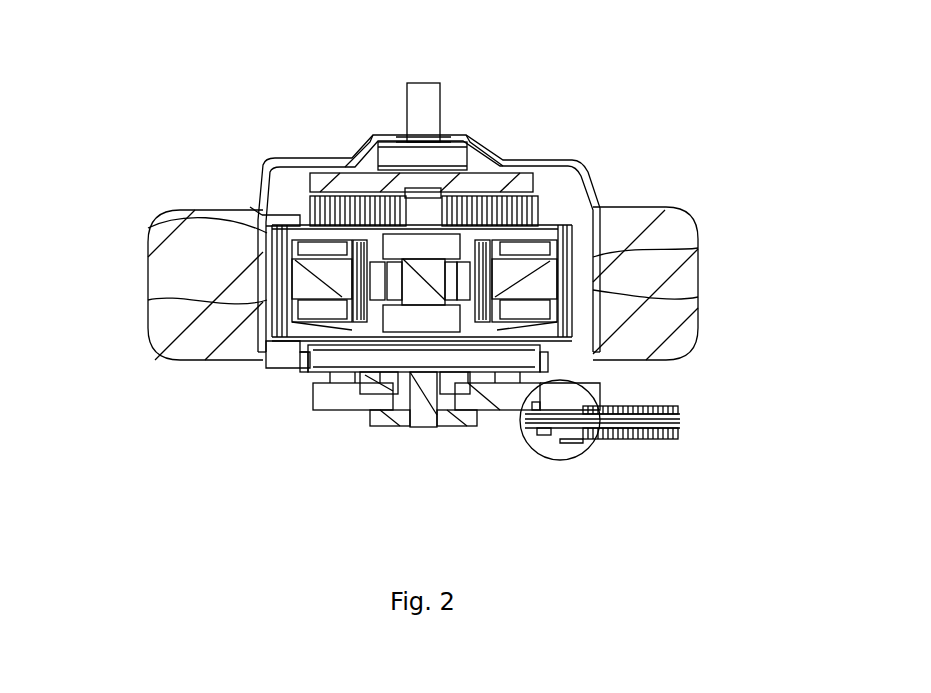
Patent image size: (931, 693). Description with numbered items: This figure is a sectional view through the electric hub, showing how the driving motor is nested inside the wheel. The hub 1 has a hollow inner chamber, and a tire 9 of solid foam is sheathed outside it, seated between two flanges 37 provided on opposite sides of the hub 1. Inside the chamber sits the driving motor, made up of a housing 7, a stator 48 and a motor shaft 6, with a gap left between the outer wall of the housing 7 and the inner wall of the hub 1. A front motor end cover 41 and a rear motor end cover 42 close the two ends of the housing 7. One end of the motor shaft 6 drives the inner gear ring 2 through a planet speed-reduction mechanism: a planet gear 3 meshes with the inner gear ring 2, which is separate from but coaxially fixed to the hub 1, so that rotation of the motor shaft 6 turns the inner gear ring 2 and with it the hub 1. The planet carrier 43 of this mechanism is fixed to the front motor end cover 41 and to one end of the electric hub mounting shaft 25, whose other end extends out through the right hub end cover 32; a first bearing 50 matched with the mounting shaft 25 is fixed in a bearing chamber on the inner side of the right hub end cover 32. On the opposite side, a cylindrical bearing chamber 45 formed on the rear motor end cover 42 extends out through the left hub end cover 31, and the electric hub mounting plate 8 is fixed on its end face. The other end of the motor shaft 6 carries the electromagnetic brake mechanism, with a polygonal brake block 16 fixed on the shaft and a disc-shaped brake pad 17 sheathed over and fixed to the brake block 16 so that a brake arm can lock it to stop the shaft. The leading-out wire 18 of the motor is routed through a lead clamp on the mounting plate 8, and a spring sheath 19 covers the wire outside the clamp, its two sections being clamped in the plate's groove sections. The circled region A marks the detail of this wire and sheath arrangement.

The hub 1 is at (267, 302).
The inner gear ring 2 is at (298, 207).
The planet gear 3 is at (545, 200).
The motor shaft 6 is at (426, 432).
The housing 7 is at (565, 270).
The electric hub mounting plate 8 is at (333, 390).
The tire 9 is at (640, 207).
The brake block 16 is at (442, 432).
The brake pad 17 is at (375, 423).
The leading-out wire 18 is at (677, 417).
The spring sheath 19 is at (657, 440).
The electric hub mounting shaft 25 is at (420, 113).
The left hub end cover 31 is at (605, 360).
The right hub end cover 32 is at (520, 162).
The flanges 37 is at (257, 227).
The front motor end cover 41 is at (297, 232).
The rear motor end cover 42 is at (293, 346).
The planet carrier 43 is at (347, 187).
The cylindrical bearing chamber 45 is at (393, 380).
The stator 48 is at (530, 295).
The first bearing 50 is at (443, 158).
The detail region A is at (578, 458).